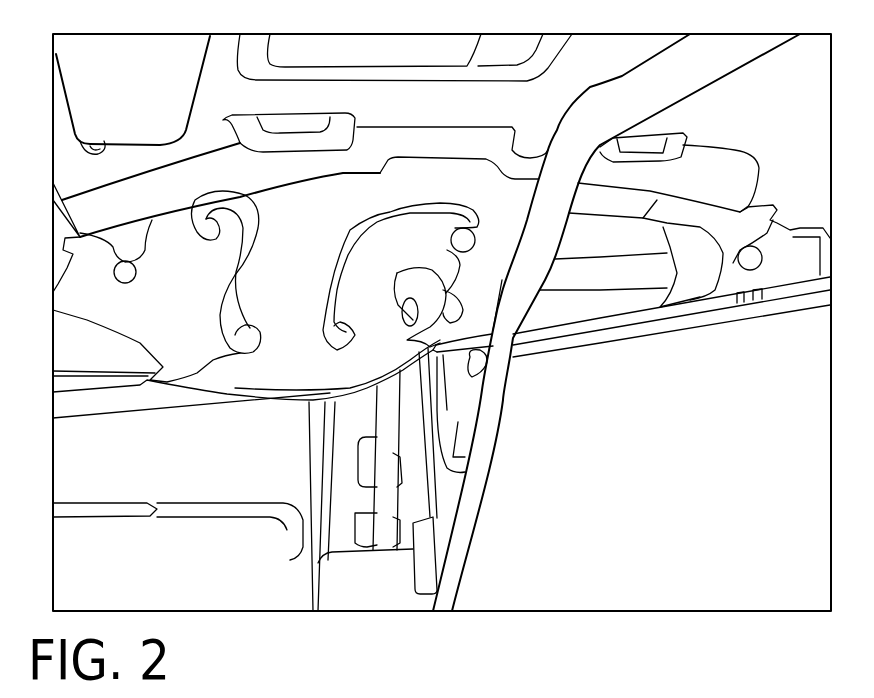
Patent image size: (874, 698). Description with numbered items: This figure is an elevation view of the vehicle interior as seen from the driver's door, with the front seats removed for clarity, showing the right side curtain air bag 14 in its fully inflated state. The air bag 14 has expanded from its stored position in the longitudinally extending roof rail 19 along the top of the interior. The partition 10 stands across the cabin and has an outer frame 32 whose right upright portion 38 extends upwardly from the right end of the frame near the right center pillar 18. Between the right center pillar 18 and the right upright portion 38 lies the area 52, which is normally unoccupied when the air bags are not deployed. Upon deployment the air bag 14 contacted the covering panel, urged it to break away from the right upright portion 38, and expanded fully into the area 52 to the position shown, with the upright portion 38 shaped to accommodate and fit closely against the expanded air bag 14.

The partition 10 is at (648, 418).
The right side curtain air bag 14 is at (302, 284).
The right center pillar 18 is at (340, 480).
The roof rail 19 is at (350, 174).
The outer frame 32 is at (619, 72).
The right upright portion 38 is at (538, 203).
The area 52 is at (497, 290).